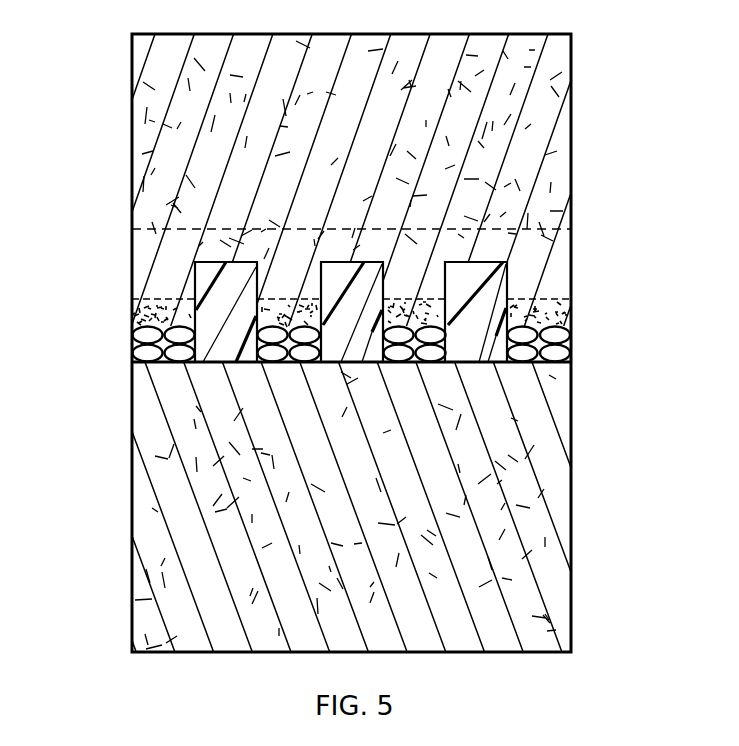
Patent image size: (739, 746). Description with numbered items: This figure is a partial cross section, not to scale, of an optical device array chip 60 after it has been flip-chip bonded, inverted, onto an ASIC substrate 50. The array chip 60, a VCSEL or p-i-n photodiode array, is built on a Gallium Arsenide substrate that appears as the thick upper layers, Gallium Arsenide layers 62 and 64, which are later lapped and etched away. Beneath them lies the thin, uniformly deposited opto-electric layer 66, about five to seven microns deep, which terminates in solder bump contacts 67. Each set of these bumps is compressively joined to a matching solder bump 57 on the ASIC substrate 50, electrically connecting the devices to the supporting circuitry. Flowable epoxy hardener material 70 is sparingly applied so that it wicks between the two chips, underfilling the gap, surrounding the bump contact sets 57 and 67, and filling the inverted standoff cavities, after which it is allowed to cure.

The ASIC substrate 50 is at (571, 458).
The solder bumps 57 is at (571, 353).
The optical device array chip 60 is at (571, 118).
The Gallium Arsenide layer 62 is at (132, 120).
The Gallium Arsenide layer 64 is at (132, 265).
The opto-electric layer 66 is at (132, 311).
The solder bump contacts 67 is at (571, 333).
The flowable epoxy hardener material 70 is at (500, 283).